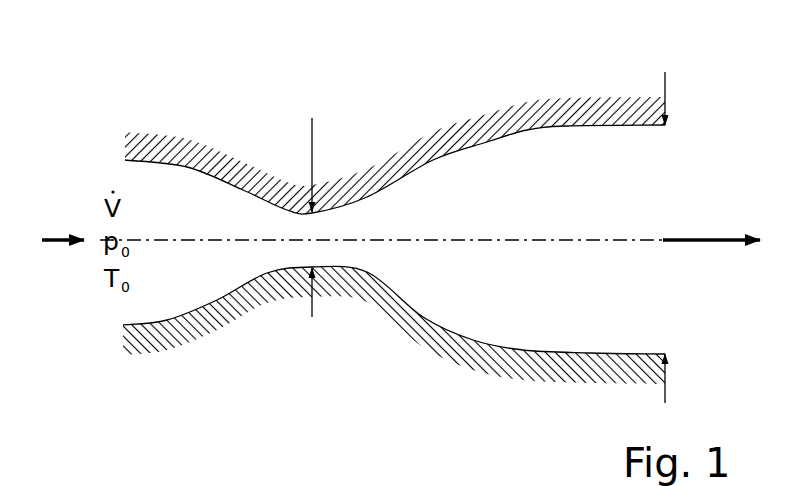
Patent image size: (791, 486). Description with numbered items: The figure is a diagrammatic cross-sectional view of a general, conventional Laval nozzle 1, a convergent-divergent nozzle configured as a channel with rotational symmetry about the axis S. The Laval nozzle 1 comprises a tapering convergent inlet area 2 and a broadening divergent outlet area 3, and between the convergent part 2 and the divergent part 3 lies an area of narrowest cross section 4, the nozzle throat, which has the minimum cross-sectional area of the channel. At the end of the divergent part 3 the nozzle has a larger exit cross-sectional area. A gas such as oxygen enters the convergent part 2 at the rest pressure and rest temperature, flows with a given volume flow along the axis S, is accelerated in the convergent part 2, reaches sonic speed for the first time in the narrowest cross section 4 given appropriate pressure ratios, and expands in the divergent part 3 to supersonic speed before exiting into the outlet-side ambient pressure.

The Laval nozzle 1 is at (122, 367).
The convergent inlet area 2 is at (125, 188).
The divergent outlet area 3 is at (557, 193).
The area of narrowest cross section 4 is at (302, 222).
The axis S is at (202, 240).